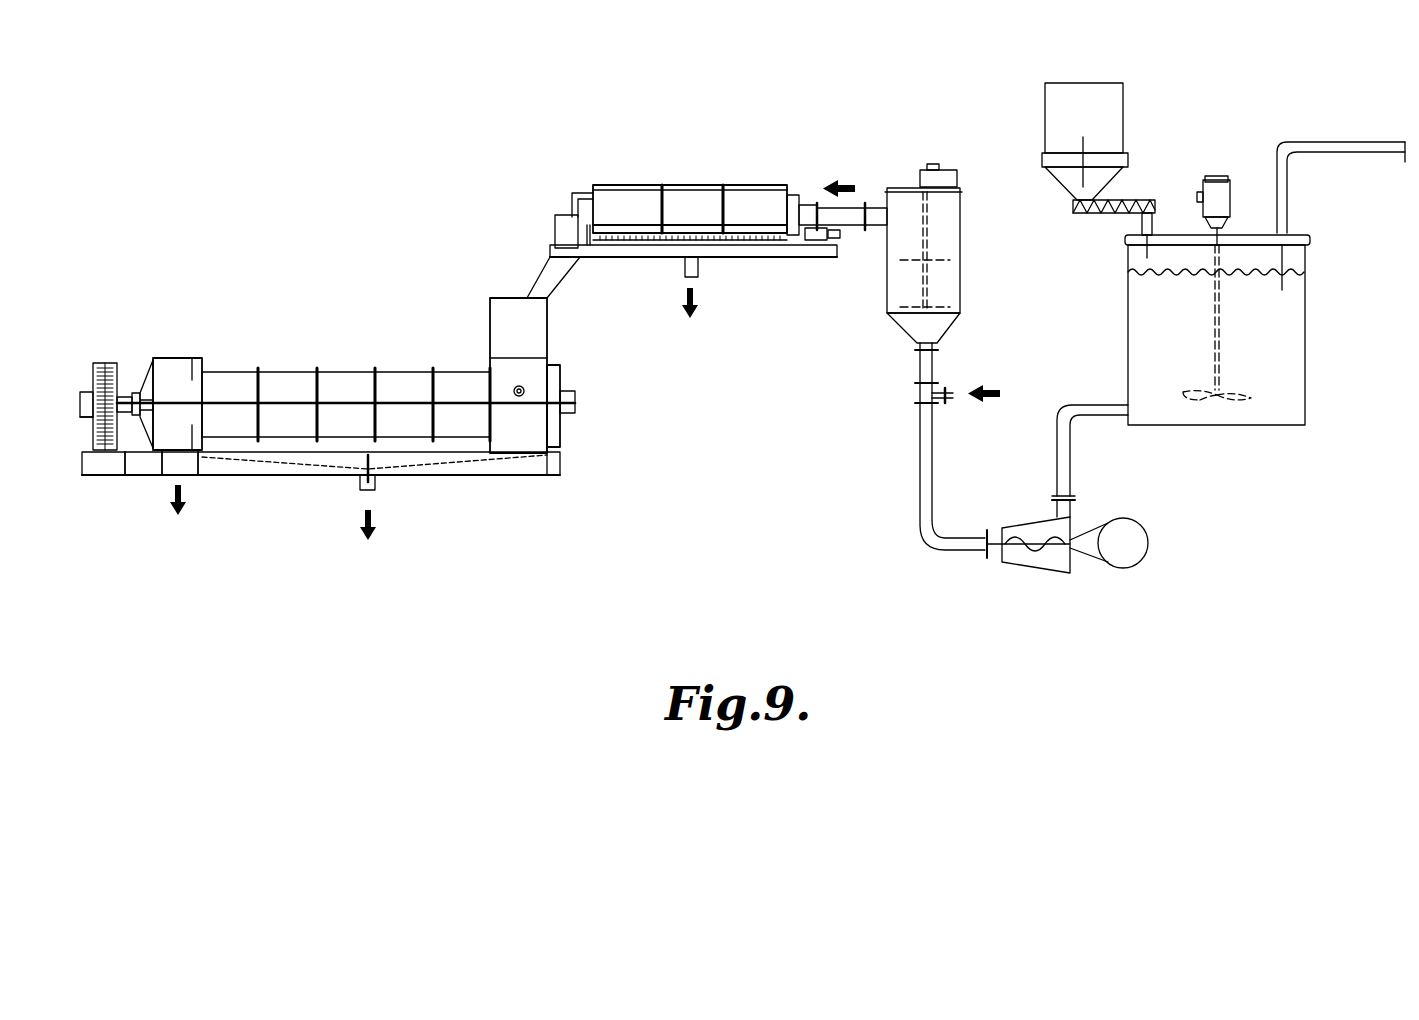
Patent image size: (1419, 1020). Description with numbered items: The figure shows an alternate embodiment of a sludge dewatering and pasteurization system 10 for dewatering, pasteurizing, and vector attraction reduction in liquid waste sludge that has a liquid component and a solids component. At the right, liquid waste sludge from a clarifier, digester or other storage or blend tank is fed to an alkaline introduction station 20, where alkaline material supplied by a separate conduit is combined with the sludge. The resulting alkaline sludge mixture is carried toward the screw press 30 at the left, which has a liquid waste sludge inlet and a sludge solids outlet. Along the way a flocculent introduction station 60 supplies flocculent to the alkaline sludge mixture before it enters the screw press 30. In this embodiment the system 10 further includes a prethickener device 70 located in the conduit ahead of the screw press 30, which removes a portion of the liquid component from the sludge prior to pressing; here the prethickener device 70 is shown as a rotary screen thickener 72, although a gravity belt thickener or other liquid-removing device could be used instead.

The sludge dewatering and pasteurization system 10 is at (742, 304).
The alkaline introduction station 20 is at (1223, 254).
The screw press 30 is at (327, 407).
The flocculent introduction station 60 is at (1016, 368).
The prethickener device 70 is at (707, 176).
The rotary screen thickener 72 is at (687, 179).